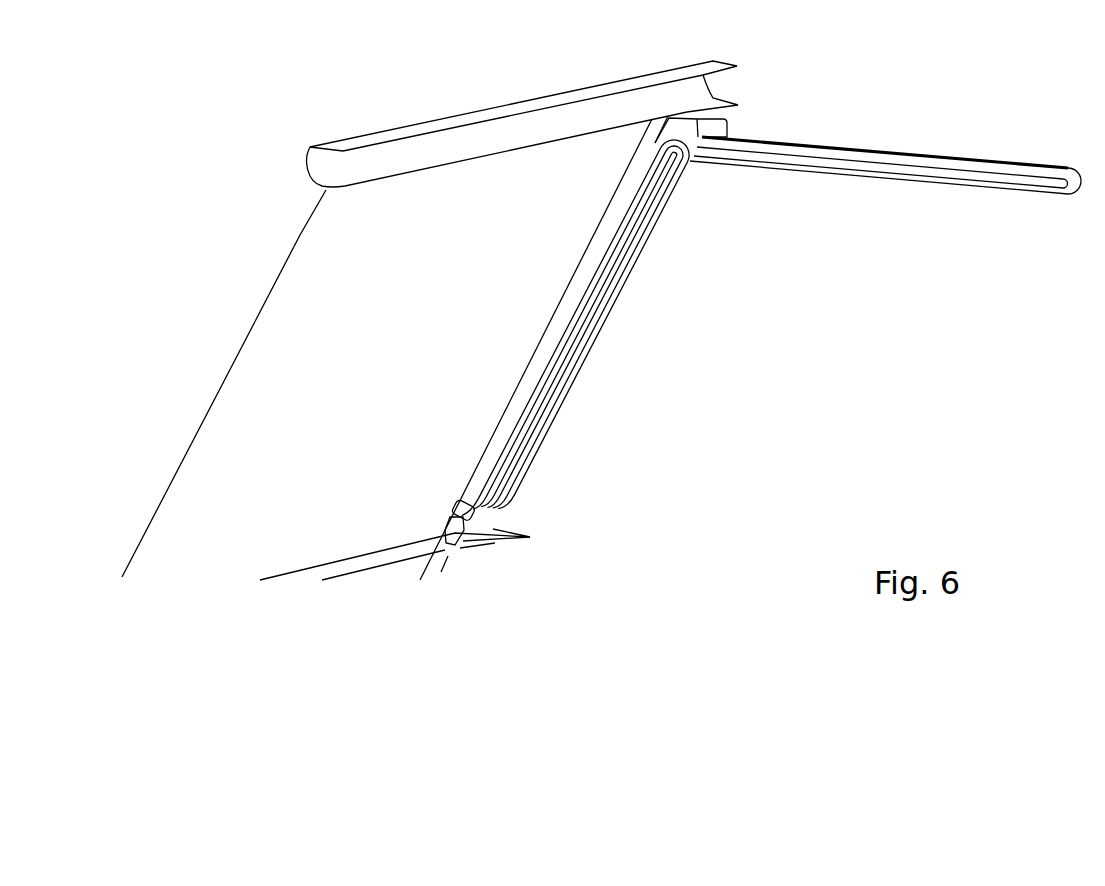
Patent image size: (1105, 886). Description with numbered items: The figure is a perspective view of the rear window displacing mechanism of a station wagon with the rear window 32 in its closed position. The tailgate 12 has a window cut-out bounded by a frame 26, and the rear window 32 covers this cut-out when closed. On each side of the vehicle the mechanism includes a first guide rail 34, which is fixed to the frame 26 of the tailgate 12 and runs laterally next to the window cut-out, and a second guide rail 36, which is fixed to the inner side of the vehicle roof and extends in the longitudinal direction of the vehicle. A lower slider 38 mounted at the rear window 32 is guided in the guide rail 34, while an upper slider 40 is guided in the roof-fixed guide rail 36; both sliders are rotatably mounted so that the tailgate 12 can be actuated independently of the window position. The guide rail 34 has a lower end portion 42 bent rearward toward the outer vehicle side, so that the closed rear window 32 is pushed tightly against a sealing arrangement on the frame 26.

The tailgate 12 is at (388, 574).
The frame 26 is at (625, 197).
The rear window 32 is at (300, 310).
The first guide rail 34 is at (600, 331).
The second guide rail 36 is at (1022, 168).
The lower slider 38 is at (480, 548).
The upper slider 40 is at (708, 108).
The lower end portion 42 is at (479, 515).